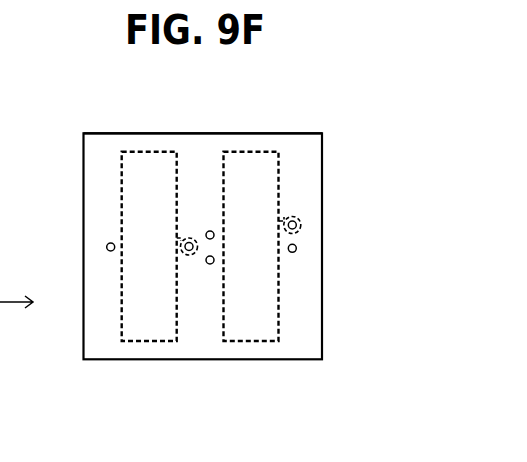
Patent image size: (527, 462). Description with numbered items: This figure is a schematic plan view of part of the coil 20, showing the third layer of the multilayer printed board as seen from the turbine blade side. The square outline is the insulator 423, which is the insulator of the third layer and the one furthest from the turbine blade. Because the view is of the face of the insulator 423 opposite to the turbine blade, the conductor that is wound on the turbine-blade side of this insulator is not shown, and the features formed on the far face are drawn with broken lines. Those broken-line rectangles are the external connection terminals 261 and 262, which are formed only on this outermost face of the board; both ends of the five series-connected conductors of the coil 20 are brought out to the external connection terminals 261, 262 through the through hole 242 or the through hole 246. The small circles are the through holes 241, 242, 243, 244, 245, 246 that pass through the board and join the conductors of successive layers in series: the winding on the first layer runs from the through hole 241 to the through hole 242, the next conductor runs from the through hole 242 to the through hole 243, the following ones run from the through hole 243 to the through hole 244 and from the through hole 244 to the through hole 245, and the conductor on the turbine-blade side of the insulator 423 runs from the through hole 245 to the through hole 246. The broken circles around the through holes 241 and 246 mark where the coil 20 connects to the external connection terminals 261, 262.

The coil 20 is at (356, 108).
The insulator 423 is at (98, 140).
The through hole 241 is at (188, 238).
The through hole 242 is at (297, 248).
The through hole 243 is at (210, 230).
The through hole 244 is at (109, 251).
The through hole 245 is at (208, 264).
The through hole 246 is at (297, 220).
The external connection terminal 261 is at (155, 315).
The external connection terminal 262 is at (257, 313).